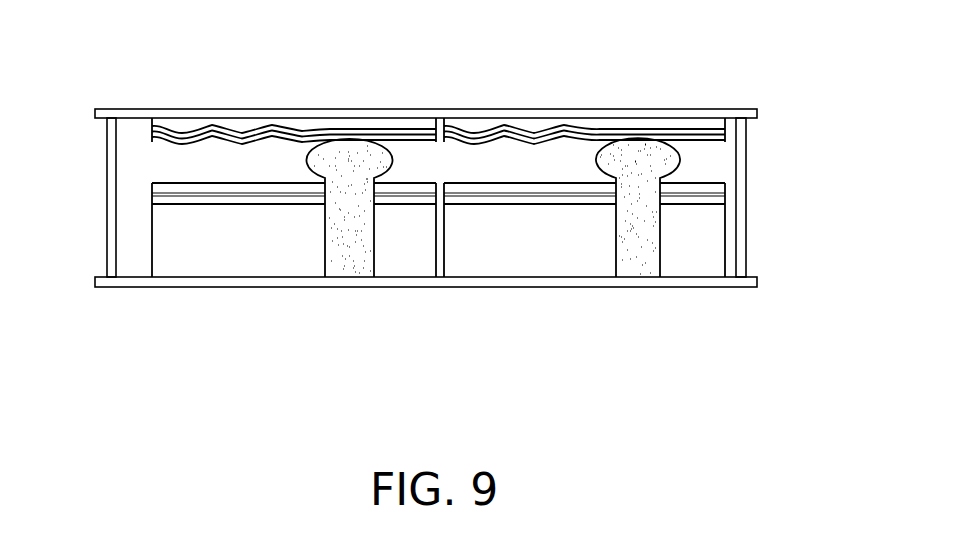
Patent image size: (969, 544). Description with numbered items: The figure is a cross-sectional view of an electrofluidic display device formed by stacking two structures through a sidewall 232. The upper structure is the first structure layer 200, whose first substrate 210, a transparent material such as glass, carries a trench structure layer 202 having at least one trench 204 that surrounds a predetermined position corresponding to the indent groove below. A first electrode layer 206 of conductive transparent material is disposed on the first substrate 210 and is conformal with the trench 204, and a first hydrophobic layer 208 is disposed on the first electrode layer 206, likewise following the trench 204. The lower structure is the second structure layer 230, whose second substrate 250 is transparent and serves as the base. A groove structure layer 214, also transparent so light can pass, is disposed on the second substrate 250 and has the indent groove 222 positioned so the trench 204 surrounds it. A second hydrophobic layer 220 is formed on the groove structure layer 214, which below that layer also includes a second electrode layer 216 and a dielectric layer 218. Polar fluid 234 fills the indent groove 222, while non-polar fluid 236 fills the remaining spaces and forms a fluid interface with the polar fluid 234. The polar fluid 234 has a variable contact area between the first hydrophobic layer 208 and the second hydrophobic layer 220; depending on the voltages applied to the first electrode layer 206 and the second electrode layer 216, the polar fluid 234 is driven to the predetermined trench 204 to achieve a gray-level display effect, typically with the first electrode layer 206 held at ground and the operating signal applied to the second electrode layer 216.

The first structure layer 200 is at (746, 77).
The first substrate 210 is at (757, 113).
The trench structure layer 202 is at (745, 128).
The first electrode layer 206 is at (723, 134).
The first hydrophobic layer 208 is at (723, 140).
The trench 204 is at (590, 162).
The non-polar fluid 236 is at (155, 173).
The sidewall 232 is at (742, 175).
The second structure layer 230 is at (745, 313).
The second substrate 250 is at (757, 282).
The groove structure layer 214 is at (557, 262).
The second hydrophobic layer 220 is at (177, 183).
The dielectric layer 218 is at (226, 195).
The second electrode layer 216 is at (273, 204).
The polar fluid 234 is at (355, 262).
The indent groove 222 is at (617, 252).